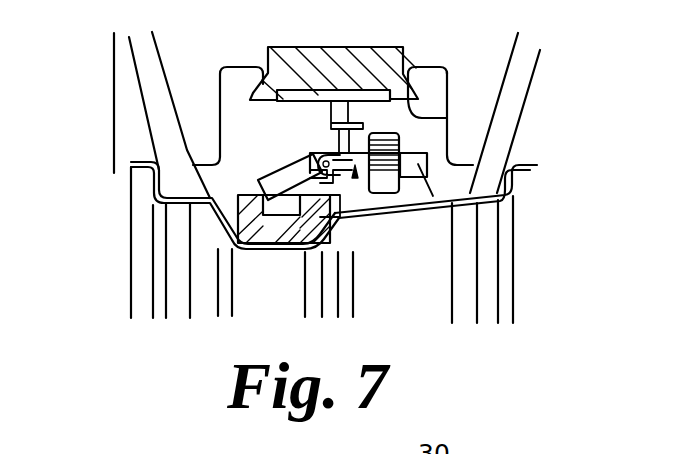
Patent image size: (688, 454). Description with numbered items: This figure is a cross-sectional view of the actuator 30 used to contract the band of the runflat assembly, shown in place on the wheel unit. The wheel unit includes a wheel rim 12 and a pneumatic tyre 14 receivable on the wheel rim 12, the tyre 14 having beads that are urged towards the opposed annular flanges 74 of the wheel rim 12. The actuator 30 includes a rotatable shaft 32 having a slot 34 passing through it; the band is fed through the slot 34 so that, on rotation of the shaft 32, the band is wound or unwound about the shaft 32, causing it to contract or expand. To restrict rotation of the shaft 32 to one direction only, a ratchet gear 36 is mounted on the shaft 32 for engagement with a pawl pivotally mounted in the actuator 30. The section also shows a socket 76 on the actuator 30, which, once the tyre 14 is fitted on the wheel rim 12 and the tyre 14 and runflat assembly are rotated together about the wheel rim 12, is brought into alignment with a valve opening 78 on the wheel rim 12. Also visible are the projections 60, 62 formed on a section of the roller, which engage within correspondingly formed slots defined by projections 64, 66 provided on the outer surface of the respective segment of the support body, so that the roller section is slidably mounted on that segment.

The pneumatic tyre 14 is at (120, 64).
The projection 66 is at (235, 87).
The slot 34 is at (353, 160).
The projection 64 is at (433, 90).
The projection 62 is at (447, 117).
The projection 60 is at (268, 103).
The annular flange 74 is at (145, 185).
The valve opening 78 is at (215, 206).
The wheel rim 12 is at (207, 290).
The socket 76 is at (278, 190).
The actuator 30 is at (356, 172).
The ratchet gear 36 is at (387, 190).
The rotatable shaft 32 is at (407, 205).